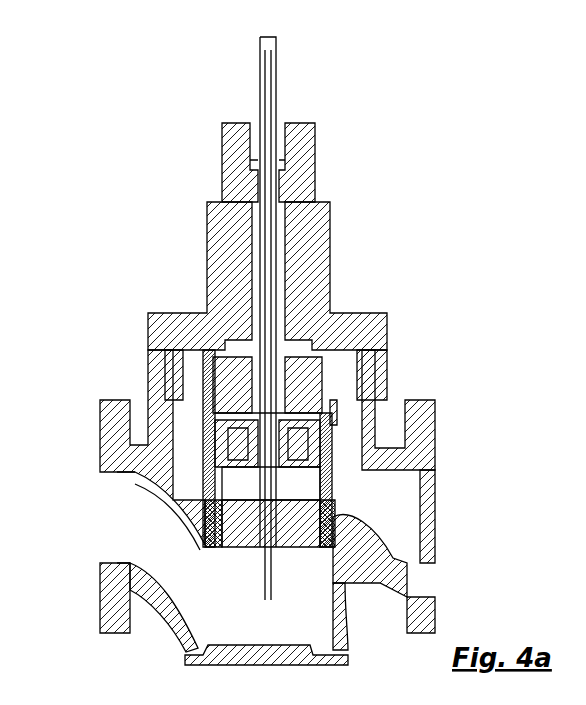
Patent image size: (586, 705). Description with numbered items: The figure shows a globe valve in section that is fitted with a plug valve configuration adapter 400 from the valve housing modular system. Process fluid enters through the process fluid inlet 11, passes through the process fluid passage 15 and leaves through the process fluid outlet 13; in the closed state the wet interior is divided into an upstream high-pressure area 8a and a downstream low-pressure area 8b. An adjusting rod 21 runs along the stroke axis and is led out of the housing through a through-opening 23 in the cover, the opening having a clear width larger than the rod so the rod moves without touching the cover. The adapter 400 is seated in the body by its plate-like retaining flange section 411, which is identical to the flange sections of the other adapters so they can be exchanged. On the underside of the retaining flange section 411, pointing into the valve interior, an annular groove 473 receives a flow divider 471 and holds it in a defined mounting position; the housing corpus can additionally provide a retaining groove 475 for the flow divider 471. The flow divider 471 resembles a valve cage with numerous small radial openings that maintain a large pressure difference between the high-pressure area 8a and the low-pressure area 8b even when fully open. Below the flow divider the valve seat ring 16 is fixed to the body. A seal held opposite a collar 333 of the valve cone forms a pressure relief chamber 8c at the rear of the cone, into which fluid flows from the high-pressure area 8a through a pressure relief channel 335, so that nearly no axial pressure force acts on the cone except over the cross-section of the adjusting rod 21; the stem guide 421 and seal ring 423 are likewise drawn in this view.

The adjusting rod 21 is at (270, 178).
The through-opening 23 is at (257, 207).
The annular groove 473 is at (332, 356).
The retaining flange section 411 is at (362, 353).
The stem guide 421 is at (287, 405).
The plug valve configuration adapter 400 is at (222, 388).
The flow divider 471 is at (345, 423).
The process fluid passage 15 is at (295, 545).
The pressure relief chamber 8c is at (271, 484).
The plug seal ring 423 is at (312, 452).
The collar 333 is at (330, 480).
The valve seat ring 16 is at (313, 540).
The retaining groove 475 is at (328, 514).
The process fluid inlet 11 is at (105, 553).
The pressure relief channel 335 is at (300, 522).
The high-pressure area 8a is at (133, 517).
The process fluid outlet 13 is at (424, 547).
The low-pressure area 8b is at (370, 582).